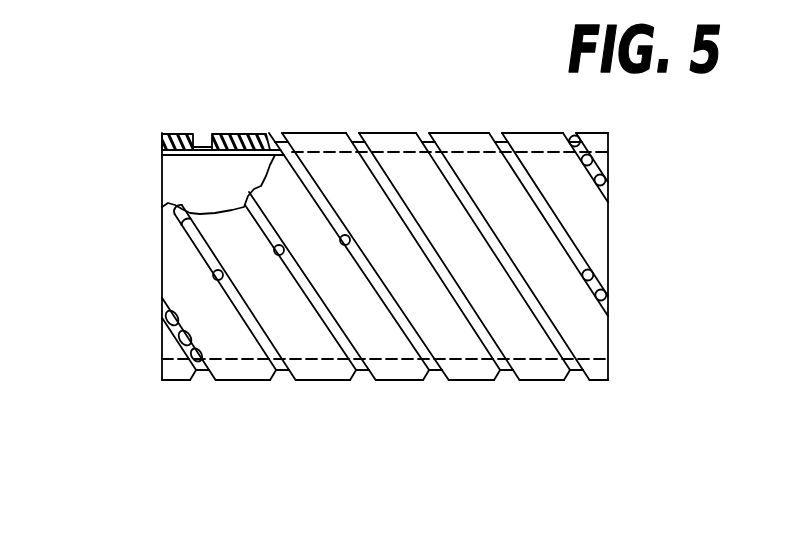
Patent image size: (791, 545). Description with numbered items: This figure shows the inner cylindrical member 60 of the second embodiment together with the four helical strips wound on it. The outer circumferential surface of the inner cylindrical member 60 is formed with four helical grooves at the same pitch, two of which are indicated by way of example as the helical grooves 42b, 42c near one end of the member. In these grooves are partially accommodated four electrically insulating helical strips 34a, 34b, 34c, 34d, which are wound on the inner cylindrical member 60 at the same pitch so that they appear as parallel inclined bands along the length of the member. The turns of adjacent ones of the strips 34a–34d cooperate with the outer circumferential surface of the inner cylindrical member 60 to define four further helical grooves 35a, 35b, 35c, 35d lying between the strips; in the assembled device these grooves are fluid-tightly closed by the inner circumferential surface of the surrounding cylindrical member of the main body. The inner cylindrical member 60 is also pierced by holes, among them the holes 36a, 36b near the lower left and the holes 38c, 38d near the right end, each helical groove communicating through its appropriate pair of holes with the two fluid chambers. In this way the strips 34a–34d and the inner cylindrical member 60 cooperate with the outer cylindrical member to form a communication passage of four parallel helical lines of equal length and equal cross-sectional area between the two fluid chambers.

The inner cylindrical member 60 is at (203, 145).
The helical groove 42b is at (175, 135).
The helical groove 42c is at (258, 138).
The hole 36a is at (180, 329).
The hole 36b is at (172, 218).
The helical groove 35a is at (196, 371).
The helical groove 35b is at (213, 271).
The helical groove 35c is at (280, 246).
The helical groove 35d is at (346, 237).
The electrically insulating helical strip 34a is at (250, 368).
The electrically insulating helical strip 34b is at (324, 368).
The electrically insulating helical strip 34c is at (394, 368).
The electrically insulating helical strip 34d is at (467, 368).
The hole 38c is at (597, 279).
The hole 38d is at (597, 176).